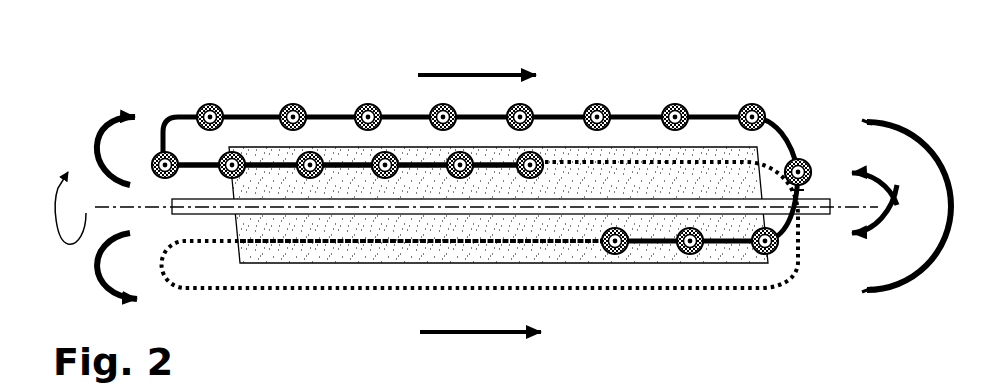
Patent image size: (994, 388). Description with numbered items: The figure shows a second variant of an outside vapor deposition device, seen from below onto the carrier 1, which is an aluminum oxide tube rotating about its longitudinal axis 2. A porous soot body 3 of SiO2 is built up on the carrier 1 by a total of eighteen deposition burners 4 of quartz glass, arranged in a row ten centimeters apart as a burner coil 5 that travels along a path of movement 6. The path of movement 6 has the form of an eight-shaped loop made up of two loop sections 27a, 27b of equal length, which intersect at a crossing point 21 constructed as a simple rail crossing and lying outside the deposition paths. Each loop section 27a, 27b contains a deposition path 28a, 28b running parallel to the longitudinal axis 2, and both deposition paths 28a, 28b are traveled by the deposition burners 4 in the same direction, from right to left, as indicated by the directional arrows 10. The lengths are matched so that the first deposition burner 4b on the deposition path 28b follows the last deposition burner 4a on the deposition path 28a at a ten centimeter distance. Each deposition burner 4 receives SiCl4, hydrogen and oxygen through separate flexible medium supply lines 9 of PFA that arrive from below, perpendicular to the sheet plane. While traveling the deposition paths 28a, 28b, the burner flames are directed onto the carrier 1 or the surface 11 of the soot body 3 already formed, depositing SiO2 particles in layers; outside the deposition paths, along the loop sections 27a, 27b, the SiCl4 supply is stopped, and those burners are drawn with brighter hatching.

The carrier 1 is at (813, 213).
The longitudinal axis 2 is at (848, 198).
The porous soot body 3 is at (255, 243).
The deposition burners 4 is at (461, 180).
The last deposition burner 4a is at (537, 157).
The first deposition burner 4b is at (615, 254).
The burner coil 5 is at (411, 152).
The path of movement 6 is at (739, 258).
The medium supply lines 9 is at (670, 100).
The directional arrows 10 is at (113, 117).
The surface 11 is at (273, 130).
The crossing point 21 is at (798, 190).
The loop section 27a is at (320, 115).
The loop section 27b is at (635, 293).
The deposition path 28a is at (427, 162).
The deposition path 28b is at (593, 243).